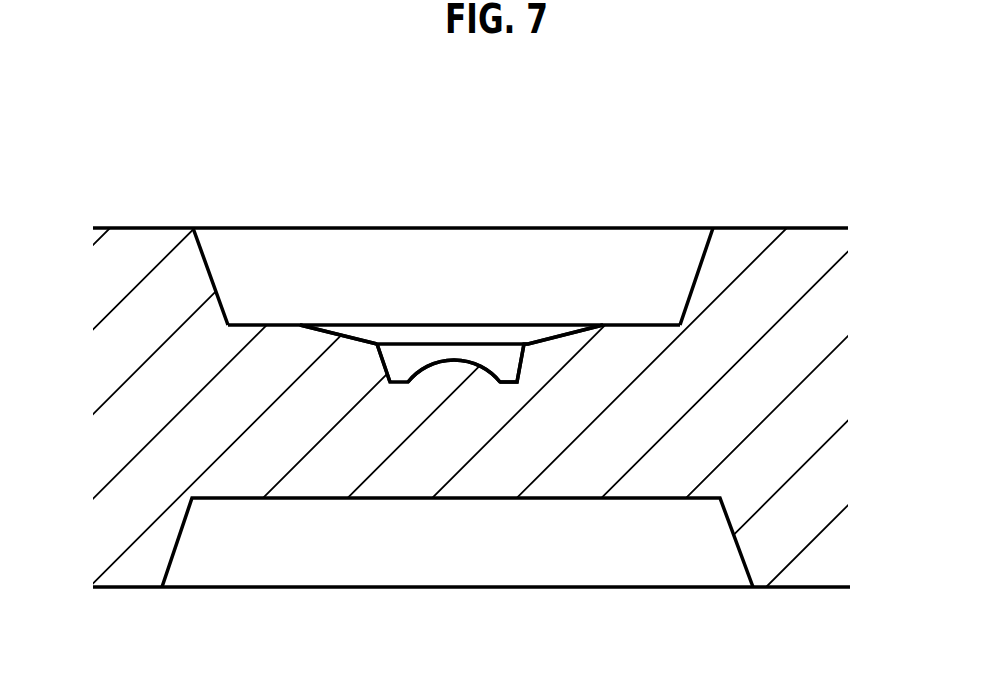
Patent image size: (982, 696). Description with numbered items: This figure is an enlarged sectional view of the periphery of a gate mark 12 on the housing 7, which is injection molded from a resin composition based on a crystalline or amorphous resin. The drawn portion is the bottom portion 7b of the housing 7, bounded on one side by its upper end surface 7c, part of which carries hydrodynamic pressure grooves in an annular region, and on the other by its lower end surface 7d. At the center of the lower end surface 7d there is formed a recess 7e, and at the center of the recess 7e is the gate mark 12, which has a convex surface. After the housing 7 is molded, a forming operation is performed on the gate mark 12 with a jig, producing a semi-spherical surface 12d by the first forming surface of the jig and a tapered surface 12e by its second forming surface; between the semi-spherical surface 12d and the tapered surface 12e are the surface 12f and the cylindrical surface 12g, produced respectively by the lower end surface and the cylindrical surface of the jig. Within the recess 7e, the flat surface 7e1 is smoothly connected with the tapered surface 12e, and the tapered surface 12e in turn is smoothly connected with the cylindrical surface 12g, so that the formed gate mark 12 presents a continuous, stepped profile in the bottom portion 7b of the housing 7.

The housing 7 is at (138, 213).
The bottom portion 7b is at (550, 430).
The upper end surface 7c is at (390, 498).
The lower end surface 7d is at (770, 228).
The recess 7e is at (293, 325).
The flat surface 7e1 is at (648, 325).
The gate mark 12 is at (484, 366).
The semi-spherical surface 12d is at (453, 360).
The tapered surface 12e is at (363, 340).
The surface 12f is at (509, 378).
The cylindrical surface 12g is at (387, 363).